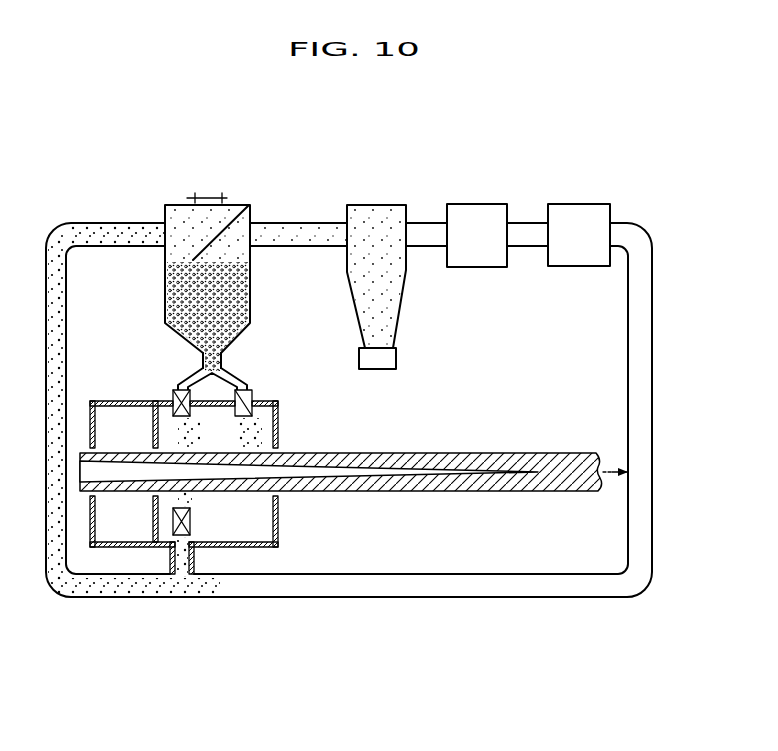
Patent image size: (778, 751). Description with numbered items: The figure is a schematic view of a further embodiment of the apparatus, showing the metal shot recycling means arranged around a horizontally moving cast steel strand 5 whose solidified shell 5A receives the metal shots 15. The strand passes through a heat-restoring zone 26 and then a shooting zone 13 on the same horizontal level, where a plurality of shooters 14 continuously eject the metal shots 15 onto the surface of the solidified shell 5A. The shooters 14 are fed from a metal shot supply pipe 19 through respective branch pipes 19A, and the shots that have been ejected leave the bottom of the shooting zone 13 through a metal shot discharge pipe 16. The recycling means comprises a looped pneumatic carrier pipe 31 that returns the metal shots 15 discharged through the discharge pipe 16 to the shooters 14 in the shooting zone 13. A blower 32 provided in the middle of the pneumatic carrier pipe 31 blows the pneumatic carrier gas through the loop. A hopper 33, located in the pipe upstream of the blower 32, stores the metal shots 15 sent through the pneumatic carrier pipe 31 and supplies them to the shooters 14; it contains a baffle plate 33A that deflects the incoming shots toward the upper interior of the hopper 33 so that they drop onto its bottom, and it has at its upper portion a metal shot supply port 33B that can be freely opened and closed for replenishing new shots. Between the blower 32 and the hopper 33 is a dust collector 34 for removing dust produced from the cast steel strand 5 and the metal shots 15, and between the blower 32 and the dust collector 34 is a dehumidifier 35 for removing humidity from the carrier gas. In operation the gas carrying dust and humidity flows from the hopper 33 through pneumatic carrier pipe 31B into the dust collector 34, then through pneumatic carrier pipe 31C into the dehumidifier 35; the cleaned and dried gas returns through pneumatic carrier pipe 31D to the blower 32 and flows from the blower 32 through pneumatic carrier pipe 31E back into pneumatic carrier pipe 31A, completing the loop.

The pneumatic carrier pipe 31 is at (656, 292).
The pneumatic carrier pipe 31A is at (67, 303).
The pneumatic carrier pipe 31B is at (295, 222).
The pneumatic carrier pipe 31C is at (422, 222).
The pneumatic carrier pipe 31D is at (525, 222).
The pneumatic carrier pipe 31E is at (473, 598).
The blower 32 is at (572, 204).
The hopper 33 is at (252, 305).
The baffle plate 33A is at (220, 237).
The metal shot supply port 33B is at (210, 197).
The dust collector 34 is at (374, 205).
The dehumidifier 35 is at (474, 204).
The metal shots 15 is at (228, 290).
The metal shot supply pipe 19 is at (223, 355).
The branch pipes 19A is at (182, 377).
The shooters 14 is at (250, 386).
The shooting zone 13 is at (265, 413).
The heat-restoring zone 26 is at (137, 420).
The metal shot discharge pipe 16 is at (195, 558).
The cast steel strand 5 is at (570, 480).
The solidified shell 5A is at (208, 466).